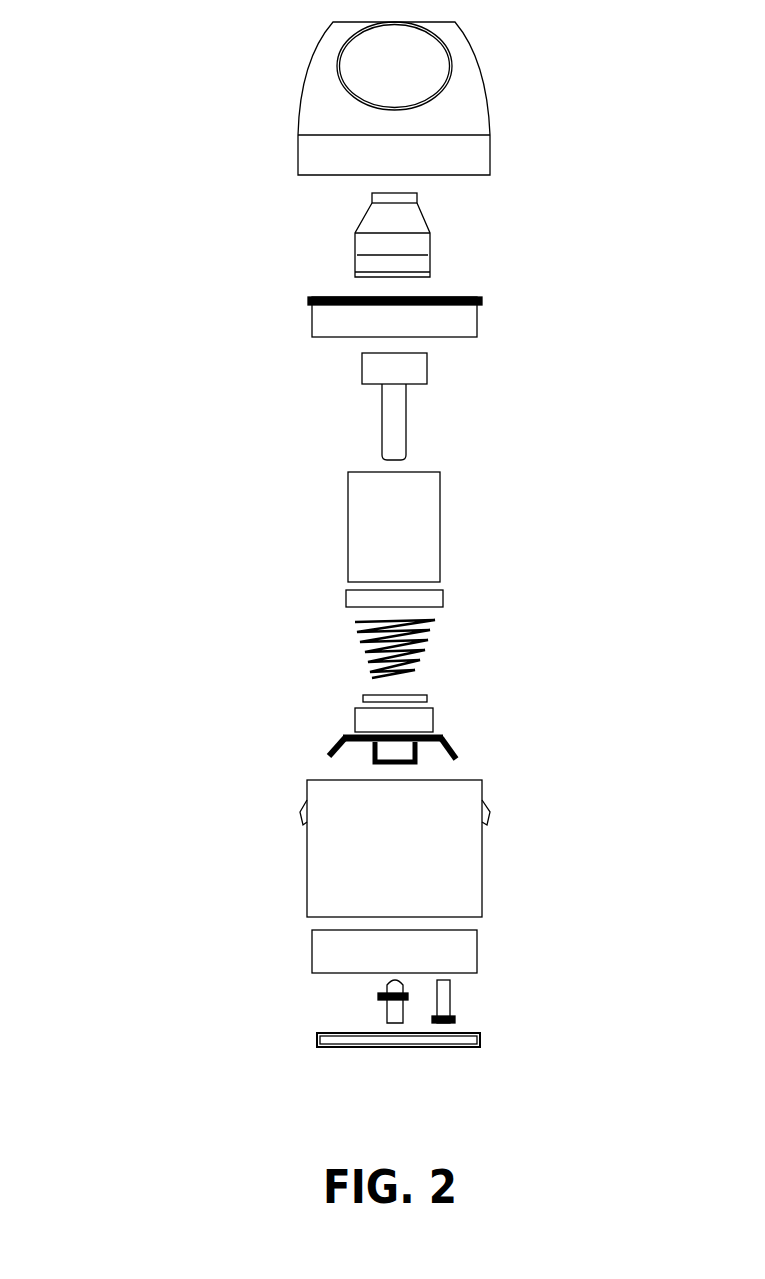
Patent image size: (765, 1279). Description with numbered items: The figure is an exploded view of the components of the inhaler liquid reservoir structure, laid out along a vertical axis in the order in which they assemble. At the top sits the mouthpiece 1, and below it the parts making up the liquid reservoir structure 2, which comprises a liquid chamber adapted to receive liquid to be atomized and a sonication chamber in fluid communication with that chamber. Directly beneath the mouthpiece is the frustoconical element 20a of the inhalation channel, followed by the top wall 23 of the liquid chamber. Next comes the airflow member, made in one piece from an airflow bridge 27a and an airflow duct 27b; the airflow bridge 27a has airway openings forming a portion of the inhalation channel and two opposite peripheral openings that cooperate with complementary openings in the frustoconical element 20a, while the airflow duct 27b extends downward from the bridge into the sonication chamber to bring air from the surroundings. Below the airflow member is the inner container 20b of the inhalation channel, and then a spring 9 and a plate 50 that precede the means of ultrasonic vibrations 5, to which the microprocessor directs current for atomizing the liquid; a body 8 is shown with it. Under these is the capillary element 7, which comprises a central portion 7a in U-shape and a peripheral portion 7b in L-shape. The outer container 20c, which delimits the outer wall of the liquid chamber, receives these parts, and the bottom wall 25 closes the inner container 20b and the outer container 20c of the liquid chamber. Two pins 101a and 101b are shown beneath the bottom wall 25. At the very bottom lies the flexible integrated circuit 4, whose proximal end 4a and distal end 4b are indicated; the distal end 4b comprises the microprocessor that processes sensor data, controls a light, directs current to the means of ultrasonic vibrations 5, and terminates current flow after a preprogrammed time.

The mouthpiece 1 is at (255, 80).
The liquid reservoir structure 2 is at (157, 385).
The frustoconical element 20a is at (347, 230).
The top wall 23 is at (450, 325).
The airflow bridge 27a is at (357, 372).
The airflow duct 27b is at (418, 416).
The inner container 20b is at (443, 527).
The spring 9 is at (355, 645).
The plate 50 is at (425, 692).
The means of ultrasonic vibrations 5 is at (476, 687).
The valve body 8 is at (435, 718).
The capillary element 7 is at (408, 753).
The central portion 7a is at (388, 770).
The peripheral portion 7b is at (452, 758).
The outer container 20c is at (482, 890).
The bottom wall 25 is at (477, 950).
The first pin 101a is at (382, 983).
The second pin 101b is at (450, 1005).
The integrated circuit 4 is at (397, 1030).
The proximal end 4a is at (482, 1032).
The distal end 4b is at (457, 1062).